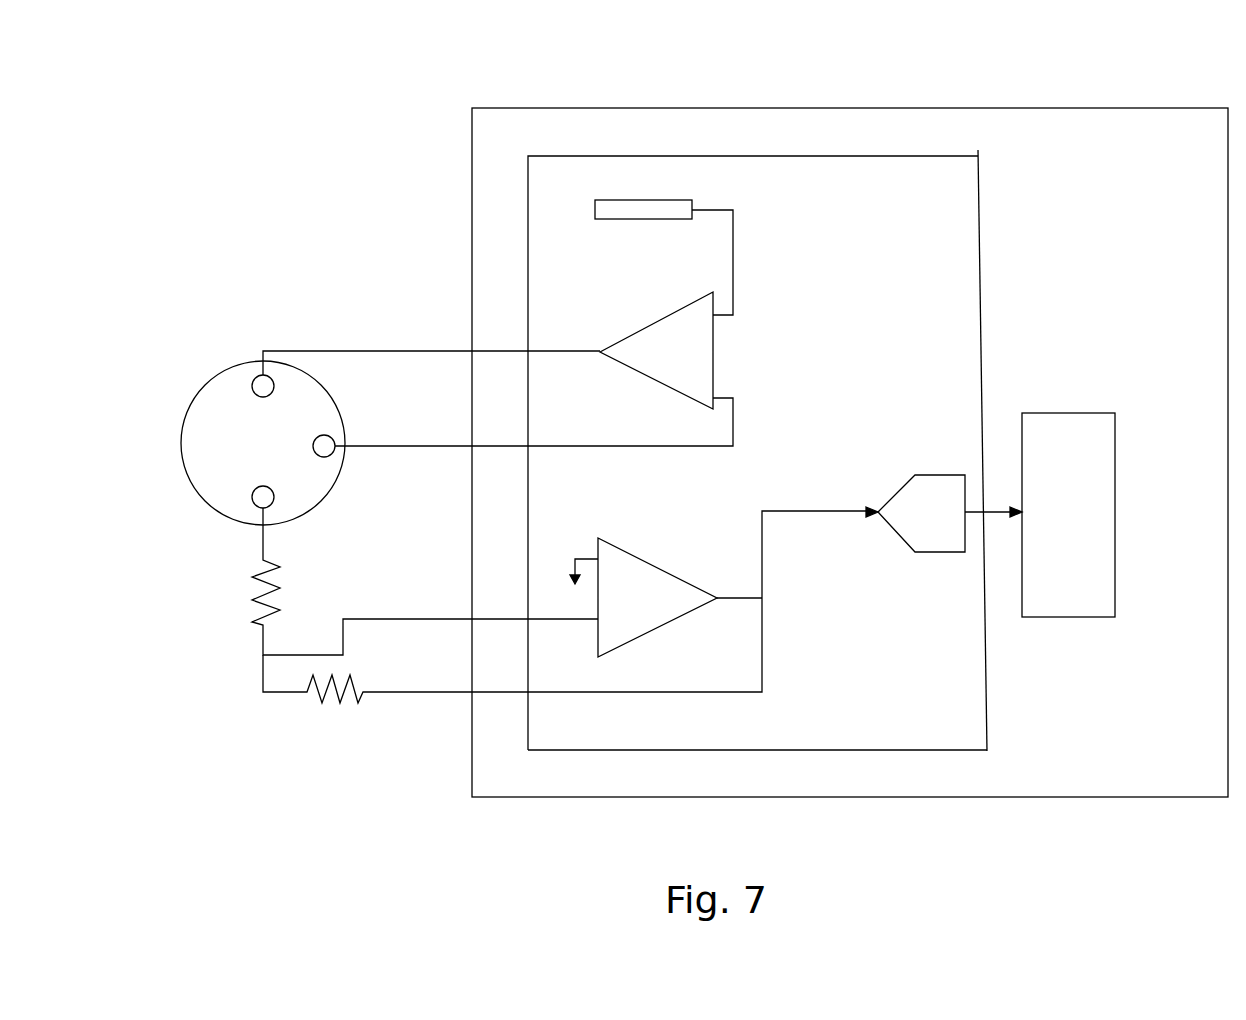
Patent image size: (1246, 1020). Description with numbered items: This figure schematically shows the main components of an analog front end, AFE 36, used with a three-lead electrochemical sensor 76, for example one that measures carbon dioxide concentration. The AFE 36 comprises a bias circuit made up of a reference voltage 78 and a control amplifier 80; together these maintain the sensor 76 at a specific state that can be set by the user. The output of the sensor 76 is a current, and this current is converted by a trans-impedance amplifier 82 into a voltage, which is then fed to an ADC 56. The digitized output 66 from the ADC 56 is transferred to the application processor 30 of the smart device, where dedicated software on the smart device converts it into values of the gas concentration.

The application processor 30 is at (1065, 413).
The AFE 36 is at (713, 155).
The ADC 56 is at (943, 473).
The output 66 is at (993, 507).
The three-lead electrochemical sensor 76 is at (223, 375).
The reference voltage 78 is at (623, 195).
The control amplifier 80 is at (648, 325).
The trans-impedance amplifier 82 is at (642, 558).